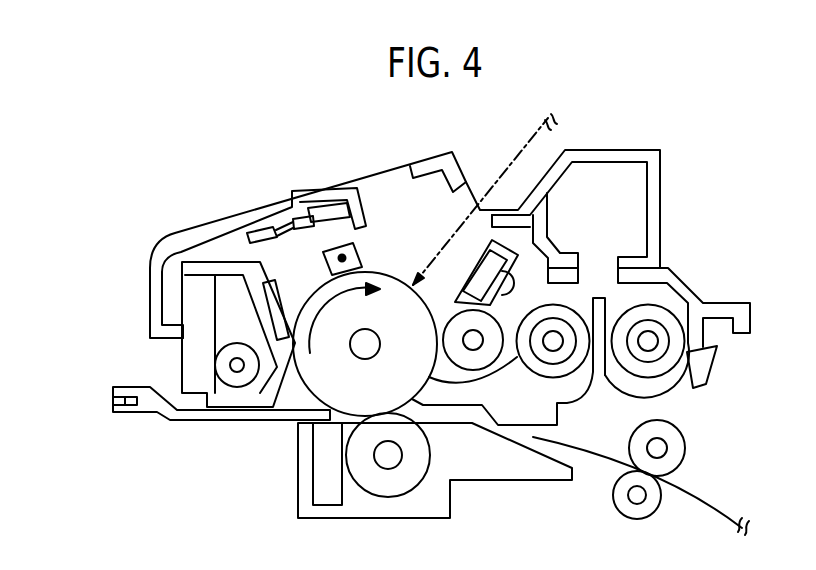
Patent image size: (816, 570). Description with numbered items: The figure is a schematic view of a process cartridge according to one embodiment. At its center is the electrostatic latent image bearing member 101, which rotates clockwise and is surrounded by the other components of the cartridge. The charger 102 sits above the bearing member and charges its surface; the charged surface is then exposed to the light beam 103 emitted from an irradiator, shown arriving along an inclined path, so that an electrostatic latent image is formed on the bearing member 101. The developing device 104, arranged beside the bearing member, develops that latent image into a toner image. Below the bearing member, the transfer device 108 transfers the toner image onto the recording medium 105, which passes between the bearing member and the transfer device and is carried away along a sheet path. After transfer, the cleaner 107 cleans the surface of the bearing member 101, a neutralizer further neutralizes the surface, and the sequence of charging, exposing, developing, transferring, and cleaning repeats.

The electrostatic latent image bearing member 101 is at (393, 274).
The charger 102 is at (365, 250).
The light beam 103 is at (518, 164).
The developing device 104 is at (482, 372).
The recording medium 105 is at (717, 500).
The cleaner 107 is at (283, 294).
The transfer device 108 is at (430, 453).